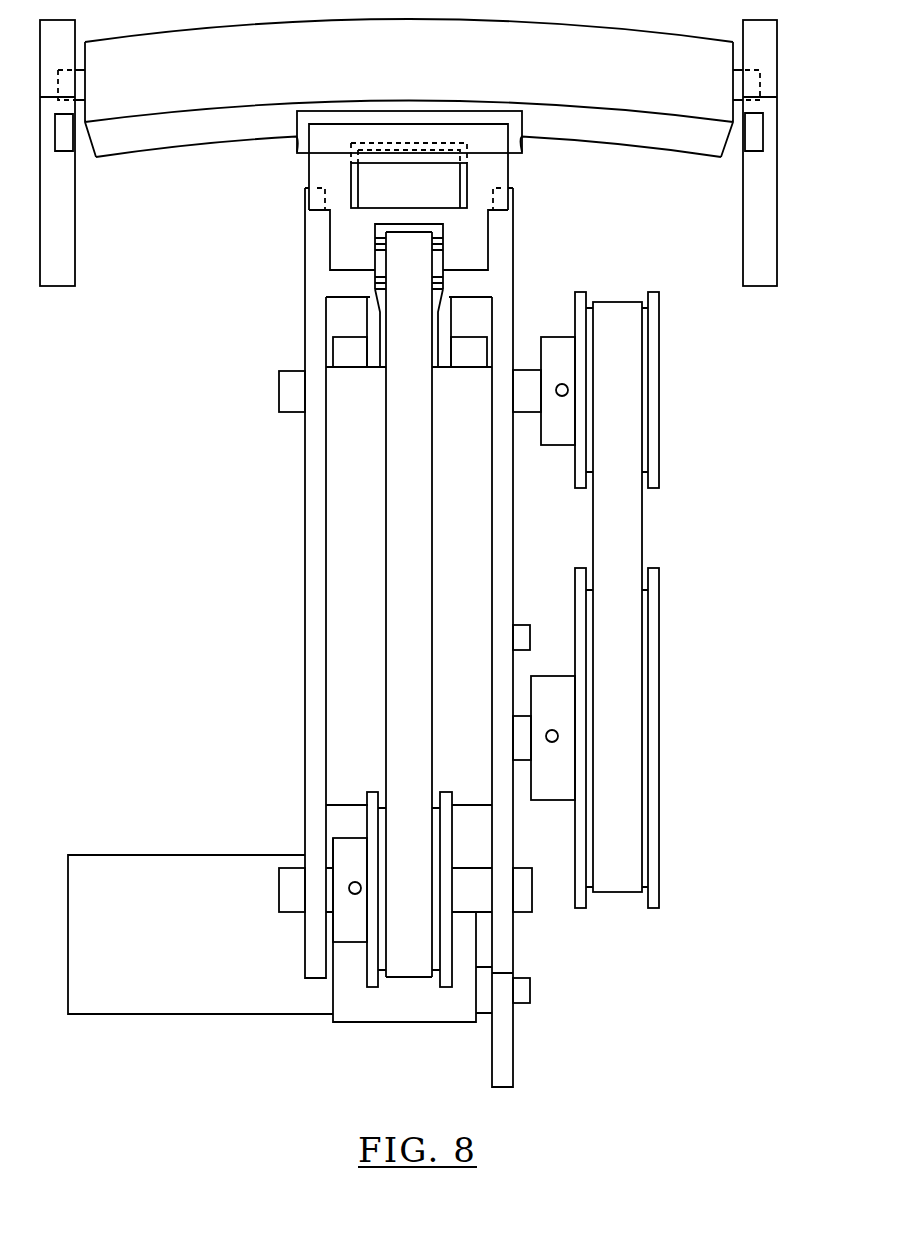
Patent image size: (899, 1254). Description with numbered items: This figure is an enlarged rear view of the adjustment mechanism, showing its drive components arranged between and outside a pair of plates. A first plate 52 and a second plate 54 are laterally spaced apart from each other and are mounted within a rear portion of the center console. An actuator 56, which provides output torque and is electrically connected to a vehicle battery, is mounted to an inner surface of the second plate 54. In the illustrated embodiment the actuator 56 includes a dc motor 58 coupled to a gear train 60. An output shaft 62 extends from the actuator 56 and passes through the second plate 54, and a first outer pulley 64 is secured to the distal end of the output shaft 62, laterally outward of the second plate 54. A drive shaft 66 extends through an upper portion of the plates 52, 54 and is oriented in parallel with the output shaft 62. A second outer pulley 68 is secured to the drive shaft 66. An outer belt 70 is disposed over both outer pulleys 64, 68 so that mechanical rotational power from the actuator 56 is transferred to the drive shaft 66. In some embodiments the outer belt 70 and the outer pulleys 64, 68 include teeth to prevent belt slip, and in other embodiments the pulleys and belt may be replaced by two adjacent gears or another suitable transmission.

The first plate 52 is at (305, 748).
The second plate 54 is at (513, 1058).
The actuator 56 is at (298, 1038).
The dc motor 58 is at (151, 1014).
The gear train 60 is at (437, 1022).
The output shaft 62 is at (520, 762).
The first outer pulley 64 is at (659, 728).
The drive shaft 66 is at (280, 388).
The second outer pulley 68 is at (660, 375).
The outer belt 70 is at (640, 535).